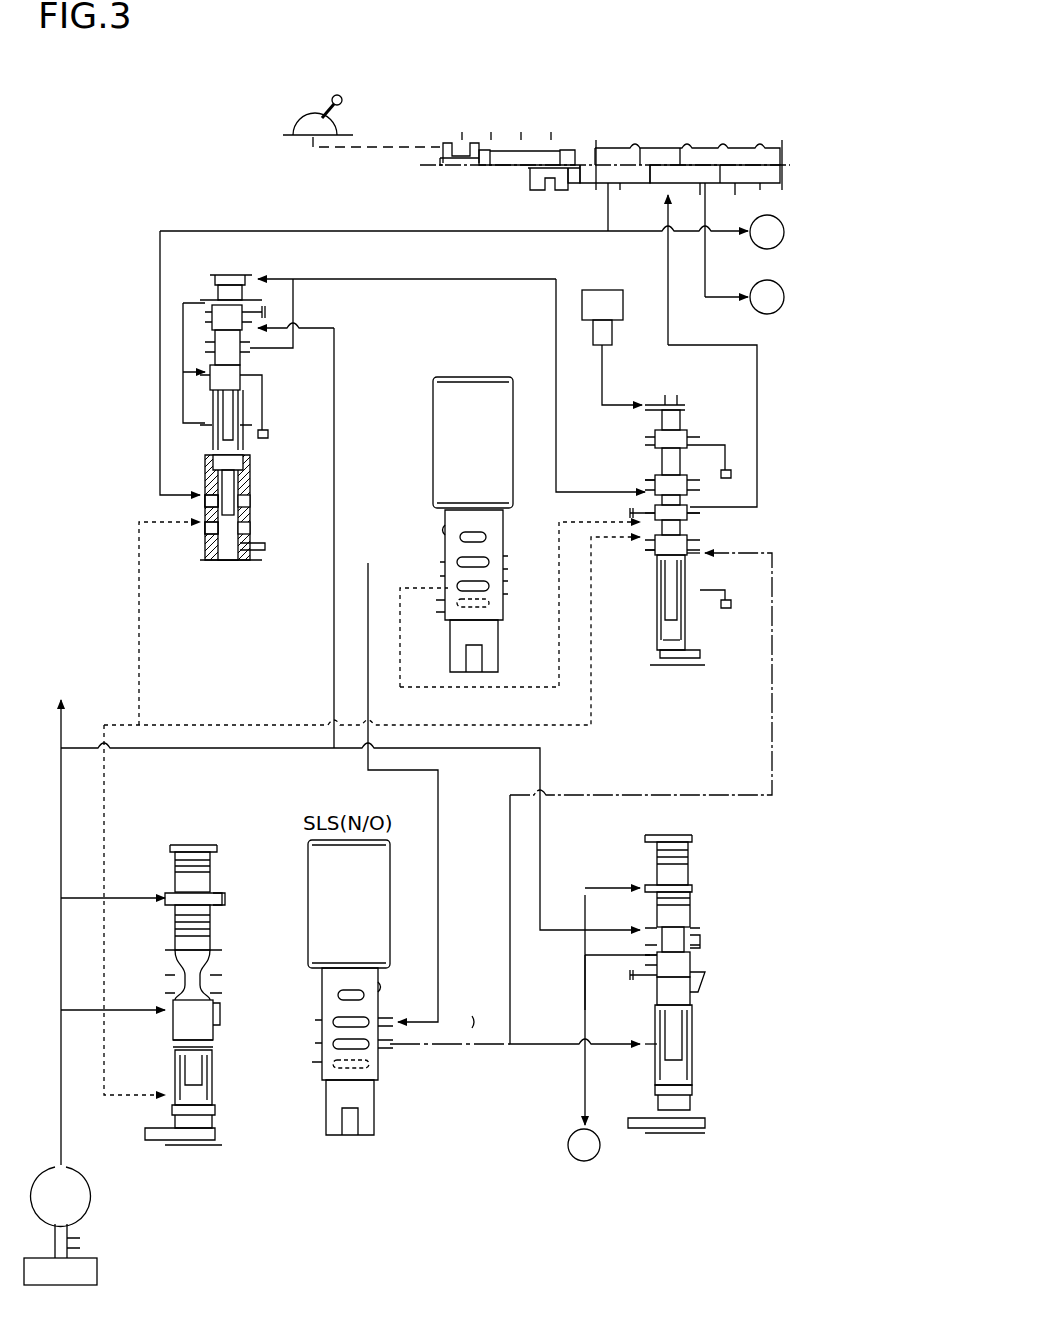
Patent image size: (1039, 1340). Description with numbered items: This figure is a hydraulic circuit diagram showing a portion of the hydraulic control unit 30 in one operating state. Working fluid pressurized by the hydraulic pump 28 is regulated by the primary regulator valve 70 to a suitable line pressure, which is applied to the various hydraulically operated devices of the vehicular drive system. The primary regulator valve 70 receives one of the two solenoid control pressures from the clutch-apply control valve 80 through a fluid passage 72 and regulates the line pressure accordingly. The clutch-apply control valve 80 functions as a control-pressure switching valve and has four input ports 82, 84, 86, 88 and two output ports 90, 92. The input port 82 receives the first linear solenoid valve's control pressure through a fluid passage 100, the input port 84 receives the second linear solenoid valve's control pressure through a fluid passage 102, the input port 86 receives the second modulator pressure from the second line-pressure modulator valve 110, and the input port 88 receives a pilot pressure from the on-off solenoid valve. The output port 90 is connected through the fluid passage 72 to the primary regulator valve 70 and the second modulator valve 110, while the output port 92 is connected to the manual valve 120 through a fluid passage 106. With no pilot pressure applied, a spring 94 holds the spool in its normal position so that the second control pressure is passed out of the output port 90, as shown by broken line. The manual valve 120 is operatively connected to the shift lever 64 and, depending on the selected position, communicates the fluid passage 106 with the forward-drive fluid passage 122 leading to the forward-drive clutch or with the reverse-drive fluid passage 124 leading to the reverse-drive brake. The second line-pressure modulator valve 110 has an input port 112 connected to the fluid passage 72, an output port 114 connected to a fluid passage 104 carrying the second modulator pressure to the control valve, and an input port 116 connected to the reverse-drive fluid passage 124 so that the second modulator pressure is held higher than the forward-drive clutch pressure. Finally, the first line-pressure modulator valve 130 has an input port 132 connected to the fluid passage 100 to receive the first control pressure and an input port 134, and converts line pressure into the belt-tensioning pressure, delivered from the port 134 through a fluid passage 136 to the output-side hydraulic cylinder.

The hydraulic control unit 30 is at (165, 135).
The shift lever 64 is at (333, 98).
The manual valve 120 is at (770, 115).
The reverse-drive fluid passage 124 is at (644, 232).
The forward-drive fluid passage 122 is at (705, 292).
The fluid passage 106 is at (716, 348).
The fluid passage 104 is at (462, 280).
The input port 88 is at (650, 400).
The line-pressure modulator No. 2 valve 110 is at (226, 572).
The output port 114 is at (252, 352).
The input port 116 is at (200, 500).
The input port 112 is at (205, 532).
The fluid passage 72 is at (170, 725).
The fluid passage 102 is at (533, 690).
The clutch-apply control valve 80 is at (668, 695).
The input port 86 is at (655, 480).
The input port 84 is at (645, 516).
The output port 92 is at (700, 513).
The output port 90 is at (650, 545).
The input port 82 is at (690, 558).
The spring 94 is at (680, 632).
The fluid passage 100 is at (708, 795).
The primary regulator valve 70 is at (202, 822).
The line-pressure modulator No. 1 valve 130 is at (712, 882).
The output port 134 is at (648, 958).
The fluid passage 136 is at (585, 1005).
The input port 132 is at (645, 1050).
The hydraulic pump 28 is at (78, 1212).